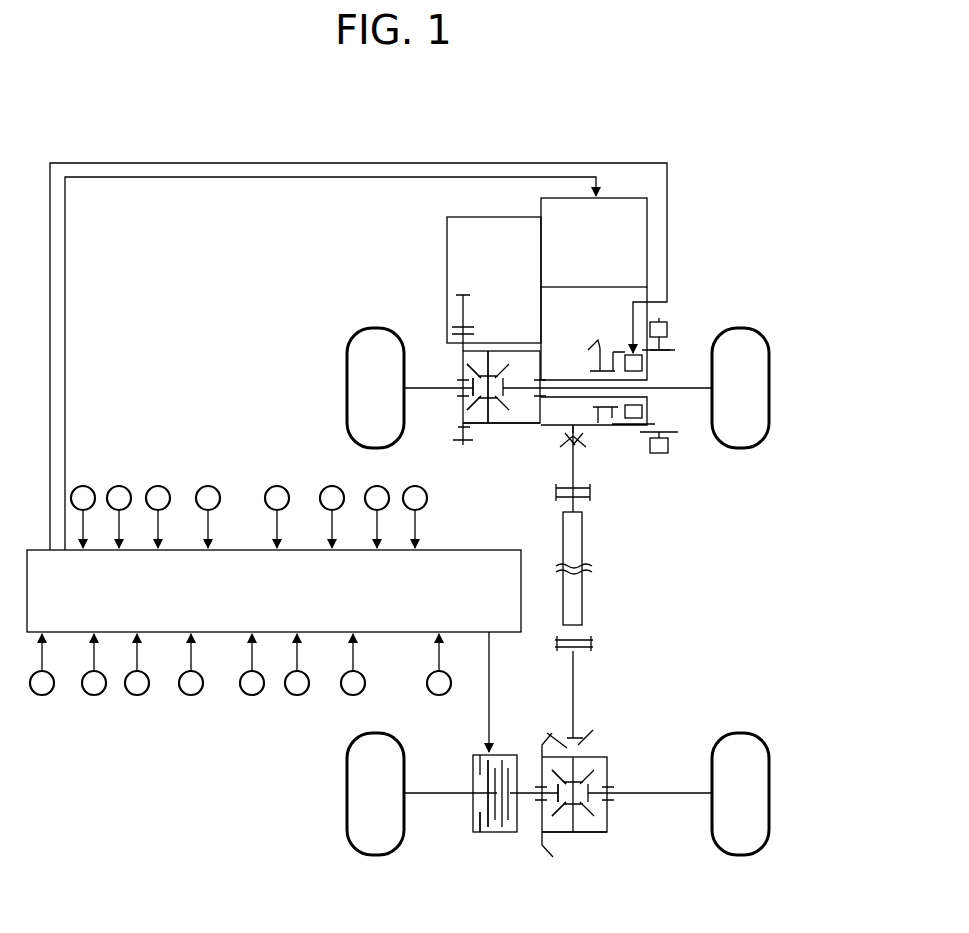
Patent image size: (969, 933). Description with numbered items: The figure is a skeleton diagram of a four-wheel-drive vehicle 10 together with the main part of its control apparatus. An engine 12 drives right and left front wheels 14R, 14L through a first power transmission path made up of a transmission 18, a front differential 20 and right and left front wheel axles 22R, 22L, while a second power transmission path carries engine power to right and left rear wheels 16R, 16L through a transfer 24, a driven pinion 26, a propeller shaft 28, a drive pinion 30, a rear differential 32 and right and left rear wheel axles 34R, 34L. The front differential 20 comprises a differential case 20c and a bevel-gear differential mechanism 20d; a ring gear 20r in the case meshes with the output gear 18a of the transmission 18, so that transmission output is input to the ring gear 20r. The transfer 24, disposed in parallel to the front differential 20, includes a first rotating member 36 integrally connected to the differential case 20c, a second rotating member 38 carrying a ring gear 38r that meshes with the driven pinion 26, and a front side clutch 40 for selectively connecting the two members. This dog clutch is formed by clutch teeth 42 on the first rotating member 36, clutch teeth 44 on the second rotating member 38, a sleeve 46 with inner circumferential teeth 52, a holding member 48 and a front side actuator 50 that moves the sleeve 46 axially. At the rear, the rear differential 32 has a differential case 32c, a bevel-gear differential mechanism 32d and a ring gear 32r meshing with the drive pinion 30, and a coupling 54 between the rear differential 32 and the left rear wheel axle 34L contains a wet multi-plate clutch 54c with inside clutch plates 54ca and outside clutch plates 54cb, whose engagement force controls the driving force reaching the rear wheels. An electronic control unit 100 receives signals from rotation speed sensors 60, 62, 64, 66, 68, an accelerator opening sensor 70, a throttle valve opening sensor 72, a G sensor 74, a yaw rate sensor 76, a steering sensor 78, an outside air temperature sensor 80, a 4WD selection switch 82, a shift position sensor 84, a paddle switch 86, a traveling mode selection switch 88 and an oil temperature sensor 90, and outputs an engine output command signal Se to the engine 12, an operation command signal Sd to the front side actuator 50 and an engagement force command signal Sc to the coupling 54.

The 4WD vehicle 10 is at (687, 150).
The engine 12 is at (607, 210).
The left front wheel 14L is at (375, 337).
The right front wheel 14R is at (740, 338).
The left rear wheel 16L is at (380, 857).
The right rear wheel 16R is at (740, 847).
The transmission 18 is at (493, 228).
The output gear 18a is at (452, 325).
The front differential 20 is at (501, 430).
The differential case 20c is at (500, 428).
The differential mechanism 20d is at (478, 416).
The ring gear 20r is at (460, 447).
The left front wheel axle 22L is at (430, 395).
The right front wheel axle 22R is at (680, 405).
The transfer 24 is at (585, 497).
The driven pinion 26 is at (572, 470).
The propeller shaft 28 is at (580, 583).
The drive pinion 30 is at (575, 705).
The rear differential 32 is at (588, 853).
The differential case 32c is at (587, 833).
The differential mechanism 32d is at (564, 830).
The ring gear 32r is at (556, 735).
The left rear wheel axle 34L is at (415, 798).
The right rear wheel axle 34R is at (685, 797).
The first rotating member 36 is at (572, 377).
The second rotating member 38 is at (598, 340).
The ring gear 38r is at (585, 410).
The front side clutch 40 is at (618, 472).
The clutch teeth 42 is at (655, 351).
The clutch teeth 44 is at (613, 352).
The sleeve 46 is at (668, 328).
The holding member 48 is at (662, 320).
The front side actuator 50 is at (633, 420).
The inner circumferential teeth 52 is at (660, 351).
The coupling 54 is at (478, 846).
The wet multi-plate clutch 54c is at (464, 778).
The inside clutch plates 54ca is at (488, 797).
The outside clutch plates 54cb is at (480, 808).
The rotation speed sensor 60 is at (90, 487).
The rotation speed sensor 62 is at (126, 487).
The rotation speed sensor 64 is at (165, 487).
The rotation speed sensor 66 is at (215, 487).
The rotation speed sensor 68 is at (284, 487).
The accelerator opening sensor 70 is at (338, 487).
The throttle valve opening sensor 72 is at (385, 487).
The G sensor 74 is at (423, 487).
The yaw rate sensor 76 is at (47, 693).
The steering sensor 78 is at (99, 693).
The outside air temperature sensor 80 is at (142, 693).
The 4WD selection switch 82 is at (196, 693).
The shift position sensor 84 is at (257, 693).
The paddle switch 86 is at (302, 693).
The traveling mode selection switch 88 is at (358, 693).
The oil temperature sensor 90 is at (444, 693).
The electronic control unit 100 is at (468, 560).